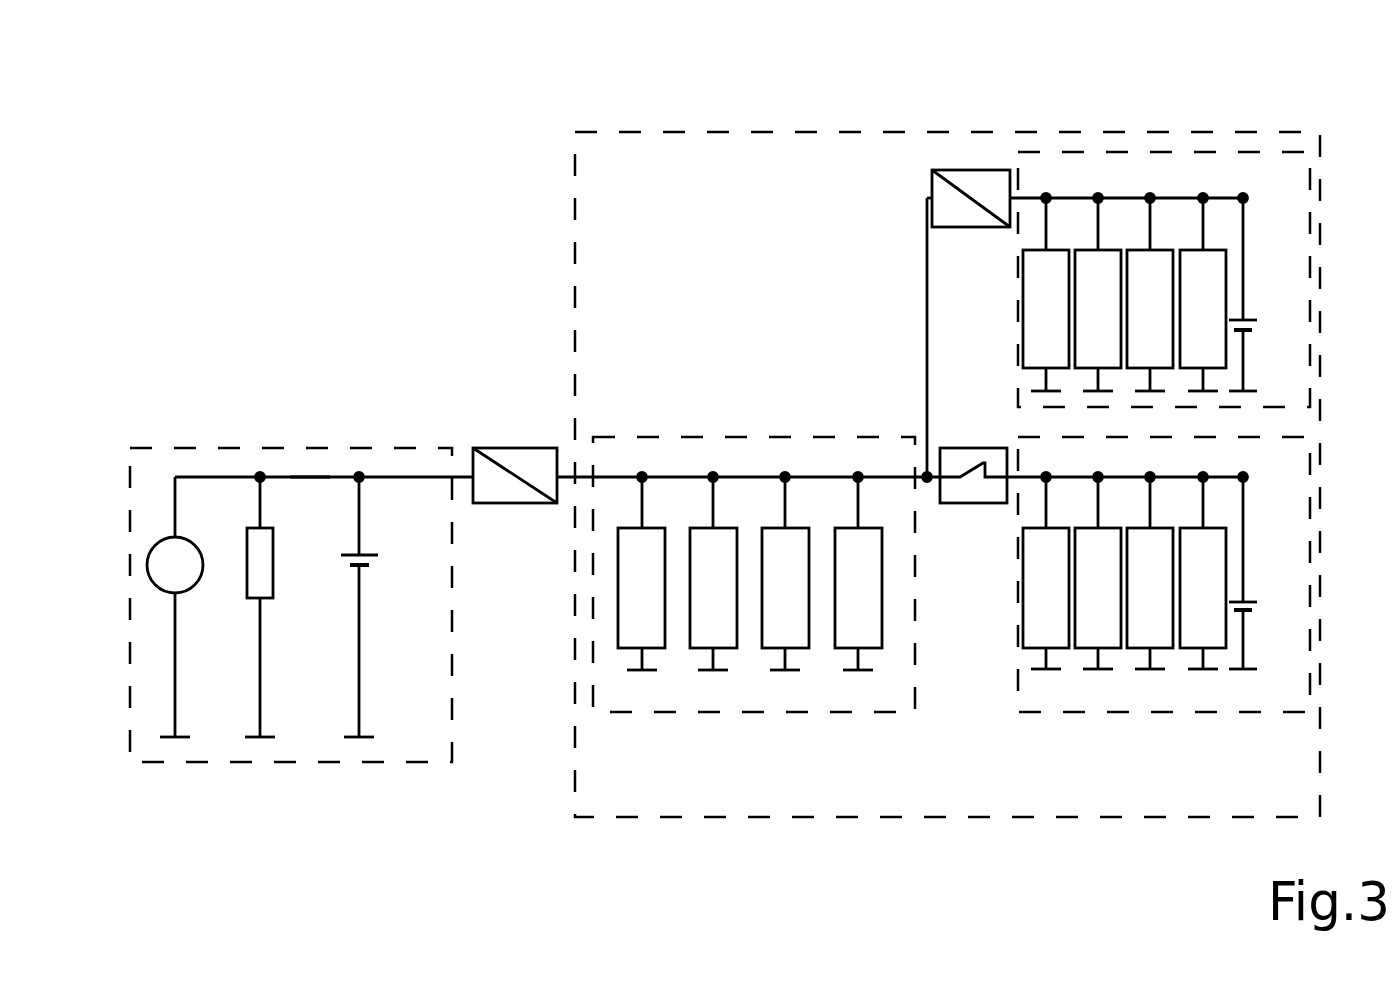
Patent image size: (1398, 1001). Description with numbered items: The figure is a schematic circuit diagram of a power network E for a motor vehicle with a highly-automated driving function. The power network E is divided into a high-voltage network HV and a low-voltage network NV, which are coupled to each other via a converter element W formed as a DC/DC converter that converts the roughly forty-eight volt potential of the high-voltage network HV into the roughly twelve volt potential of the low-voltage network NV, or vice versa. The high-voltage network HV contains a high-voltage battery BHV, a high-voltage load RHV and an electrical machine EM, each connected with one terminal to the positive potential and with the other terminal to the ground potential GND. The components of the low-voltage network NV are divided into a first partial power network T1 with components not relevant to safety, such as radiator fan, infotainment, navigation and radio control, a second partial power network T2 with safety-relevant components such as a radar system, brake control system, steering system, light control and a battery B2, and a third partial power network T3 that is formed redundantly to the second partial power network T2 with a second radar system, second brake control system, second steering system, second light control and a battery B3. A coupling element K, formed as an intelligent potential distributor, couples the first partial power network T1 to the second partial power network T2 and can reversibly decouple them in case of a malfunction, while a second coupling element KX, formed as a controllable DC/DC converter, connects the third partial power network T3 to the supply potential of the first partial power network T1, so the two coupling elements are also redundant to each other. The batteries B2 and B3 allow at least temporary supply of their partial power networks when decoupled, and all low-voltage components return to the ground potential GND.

The power network E is at (197, 237).
The high-voltage network HV is at (218, 448).
The electrical machine EM is at (175, 607).
The high-voltage load RHV is at (289, 607).
The high-voltage battery BHV is at (389, 607).
The converter element W is at (497, 448).
The low-voltage network NV is at (775, 132).
The first partial power network T1 is at (688, 712).
The second partial power network T2 is at (1158, 618).
The third partial power network T3 is at (1160, 218).
The coupling element K is at (957, 448).
The second coupling element KX is at (960, 170).
The battery B2 is at (1264, 573).
The battery B3 is at (1264, 294).
The ground potential GND is at (155, 738).